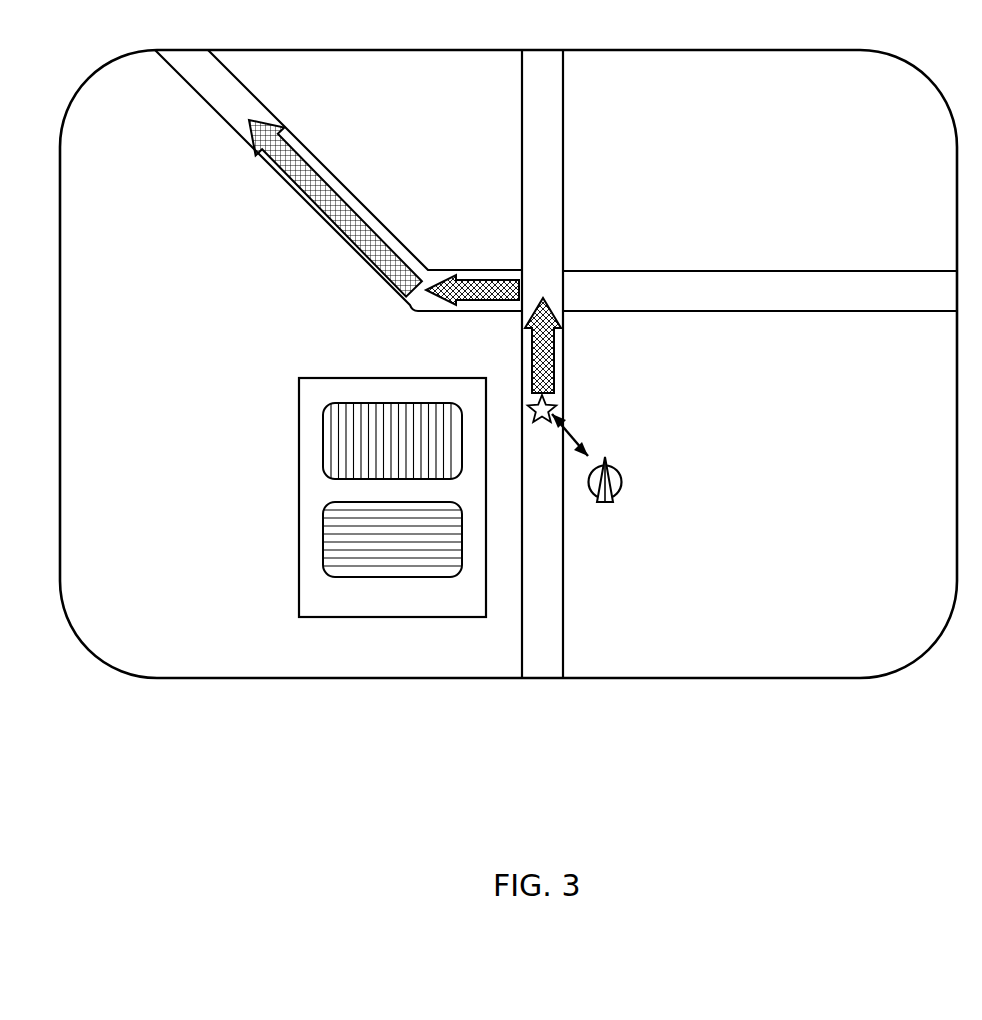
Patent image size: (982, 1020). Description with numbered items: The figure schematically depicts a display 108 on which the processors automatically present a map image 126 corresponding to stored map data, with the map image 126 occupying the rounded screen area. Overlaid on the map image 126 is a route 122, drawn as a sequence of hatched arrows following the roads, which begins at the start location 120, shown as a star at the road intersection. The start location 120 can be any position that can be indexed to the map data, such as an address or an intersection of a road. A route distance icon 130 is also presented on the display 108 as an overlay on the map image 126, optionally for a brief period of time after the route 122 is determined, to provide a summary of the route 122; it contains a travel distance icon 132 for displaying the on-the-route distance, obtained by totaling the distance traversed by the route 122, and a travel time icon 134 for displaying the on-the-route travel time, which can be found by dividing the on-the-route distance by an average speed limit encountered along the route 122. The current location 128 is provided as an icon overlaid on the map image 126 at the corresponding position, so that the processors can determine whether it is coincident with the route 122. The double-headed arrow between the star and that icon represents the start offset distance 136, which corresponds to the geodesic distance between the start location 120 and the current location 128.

The display 108 is at (123, 62).
The map image 126 is at (830, 70).
The route 122 is at (393, 227).
The start location 120 is at (540, 426).
The start offset distance 136 is at (572, 434).
The current location 128 is at (604, 503).
The route distance icon 130 is at (317, 383).
The travel distance icon 132 is at (323, 433).
The travel time icon 134 is at (323, 530).